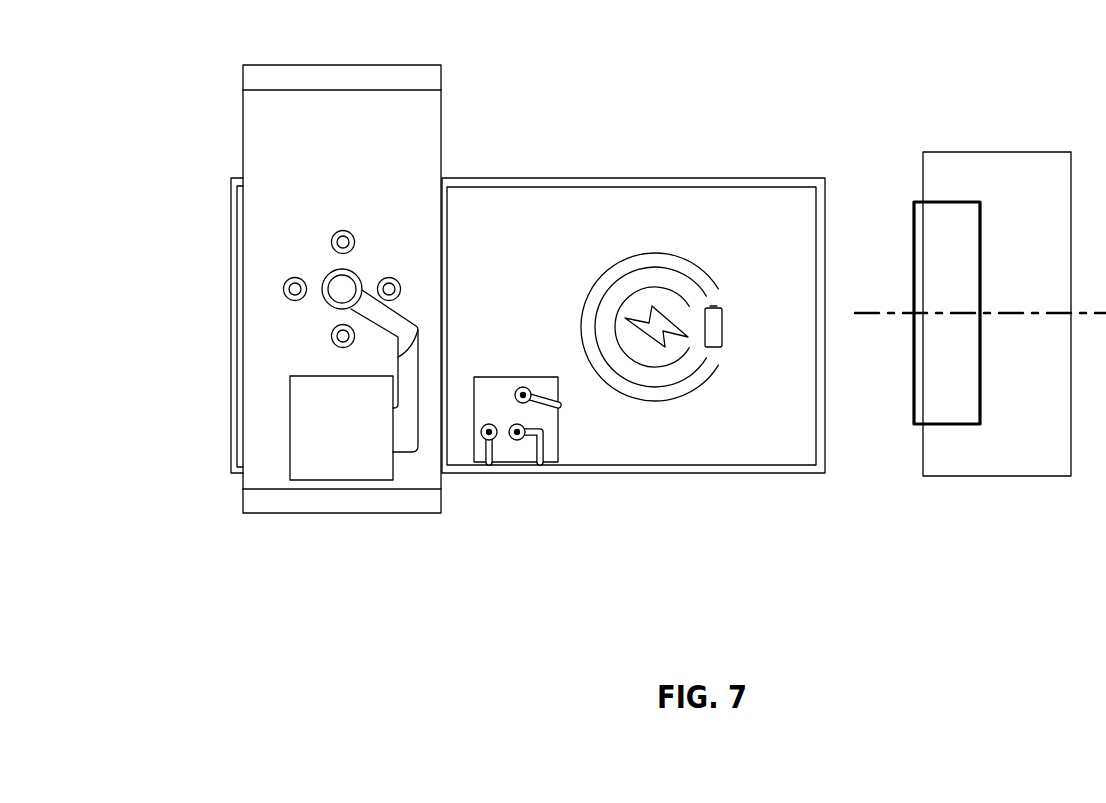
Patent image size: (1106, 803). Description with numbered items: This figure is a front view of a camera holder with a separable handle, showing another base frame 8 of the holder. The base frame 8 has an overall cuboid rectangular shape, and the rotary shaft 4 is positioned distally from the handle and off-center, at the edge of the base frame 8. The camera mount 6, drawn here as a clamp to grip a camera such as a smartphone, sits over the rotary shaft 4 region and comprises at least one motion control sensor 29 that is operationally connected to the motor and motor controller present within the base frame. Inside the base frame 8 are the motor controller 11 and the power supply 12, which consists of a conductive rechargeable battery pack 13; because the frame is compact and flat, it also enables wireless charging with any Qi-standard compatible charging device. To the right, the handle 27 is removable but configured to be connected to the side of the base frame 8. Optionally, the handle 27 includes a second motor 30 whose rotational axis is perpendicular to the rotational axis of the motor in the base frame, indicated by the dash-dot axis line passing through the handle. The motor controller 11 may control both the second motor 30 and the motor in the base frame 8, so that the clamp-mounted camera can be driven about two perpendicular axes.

The rotary shaft 4 is at (350, 290).
The camera mount 6 is at (294, 168).
The base frame 8 is at (619, 218).
The motor controller 11 is at (513, 442).
The power supply 12 is at (662, 417).
The conductive rechargeable battery pack 13 is at (735, 348).
The handle 27 is at (1024, 165).
The motion control sensor 29 is at (351, 443).
The second motor 30 is at (913, 242).